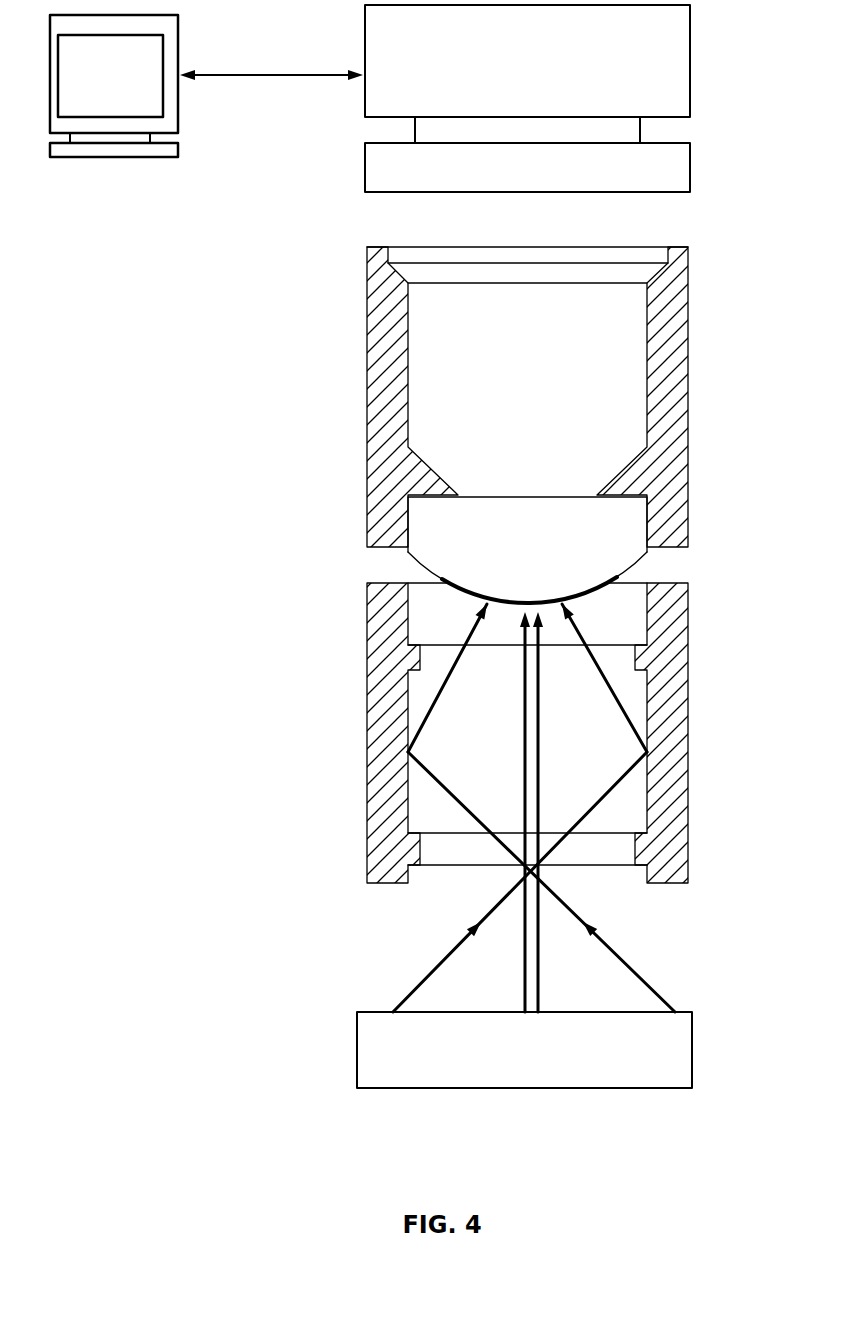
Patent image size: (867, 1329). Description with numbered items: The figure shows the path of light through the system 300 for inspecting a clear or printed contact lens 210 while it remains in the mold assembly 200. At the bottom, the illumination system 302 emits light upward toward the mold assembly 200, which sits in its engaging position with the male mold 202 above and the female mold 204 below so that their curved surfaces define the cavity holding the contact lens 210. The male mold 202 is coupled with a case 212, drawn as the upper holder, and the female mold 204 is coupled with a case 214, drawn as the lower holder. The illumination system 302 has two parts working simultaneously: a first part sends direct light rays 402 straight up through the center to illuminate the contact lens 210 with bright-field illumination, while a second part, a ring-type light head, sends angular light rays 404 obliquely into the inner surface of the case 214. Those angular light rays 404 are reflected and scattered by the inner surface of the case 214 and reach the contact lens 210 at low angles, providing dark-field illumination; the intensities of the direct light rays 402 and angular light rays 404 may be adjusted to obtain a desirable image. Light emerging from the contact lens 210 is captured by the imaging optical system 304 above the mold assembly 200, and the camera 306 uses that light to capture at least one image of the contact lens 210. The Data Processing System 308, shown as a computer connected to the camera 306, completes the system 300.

The mold assembly 200 is at (347, 452).
The male mold 202 is at (597, 568).
The female mold 204 is at (622, 598).
The contact lens 210 is at (585, 591).
The case 212 is at (682, 350).
The case 214 is at (680, 798).
The system 300 is at (168, 1072).
The illumination system 302 is at (692, 1048).
The imaging optical system 304 is at (692, 165).
The camera 306 is at (692, 70).
The Data Processing System 308 is at (178, 48).
The direct light rays 402 is at (530, 975).
The angular light rays 404 is at (410, 986).